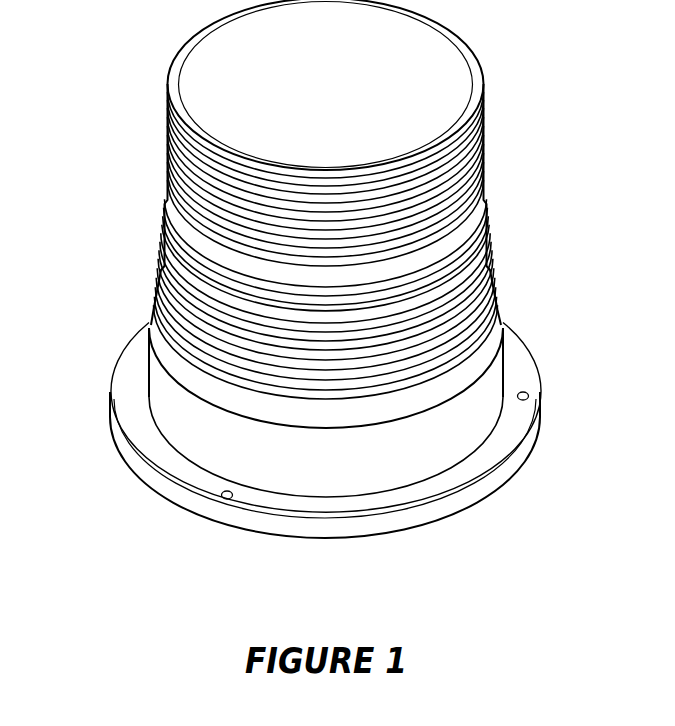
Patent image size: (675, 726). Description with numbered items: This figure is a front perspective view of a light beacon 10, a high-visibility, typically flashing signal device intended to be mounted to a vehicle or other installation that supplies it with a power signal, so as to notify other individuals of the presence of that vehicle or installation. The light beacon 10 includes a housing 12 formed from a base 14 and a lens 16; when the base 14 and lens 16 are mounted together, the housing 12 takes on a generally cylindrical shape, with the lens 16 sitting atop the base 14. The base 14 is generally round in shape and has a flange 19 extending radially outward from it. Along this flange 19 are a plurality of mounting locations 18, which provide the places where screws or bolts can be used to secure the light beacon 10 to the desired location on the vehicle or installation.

The light beacon 10 is at (324, 287).
The housing 12 is at (335, 434).
The base 14 is at (530, 358).
The lens 16 is at (455, 38).
The mounting locations 18 is at (222, 500).
The flange 19 is at (508, 482).